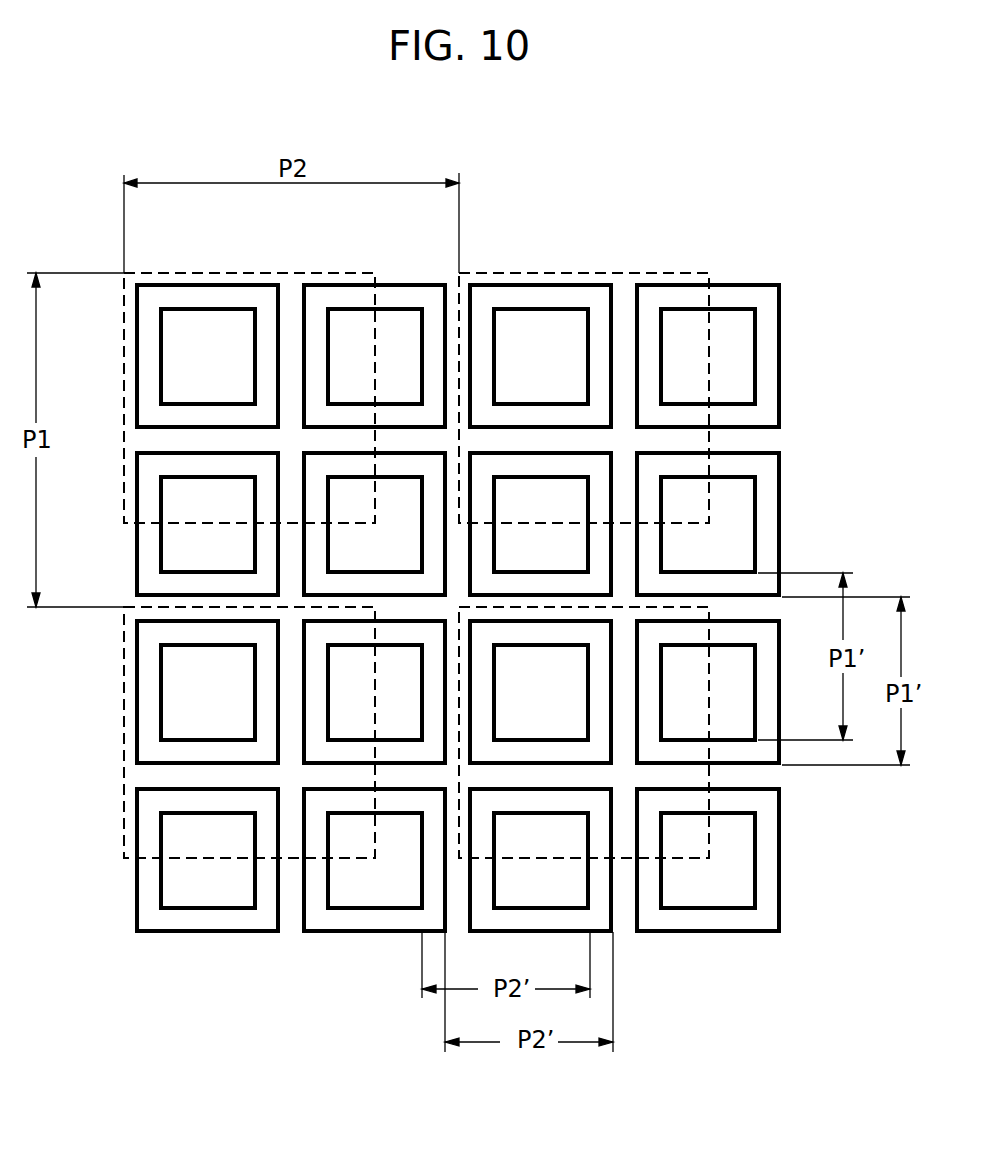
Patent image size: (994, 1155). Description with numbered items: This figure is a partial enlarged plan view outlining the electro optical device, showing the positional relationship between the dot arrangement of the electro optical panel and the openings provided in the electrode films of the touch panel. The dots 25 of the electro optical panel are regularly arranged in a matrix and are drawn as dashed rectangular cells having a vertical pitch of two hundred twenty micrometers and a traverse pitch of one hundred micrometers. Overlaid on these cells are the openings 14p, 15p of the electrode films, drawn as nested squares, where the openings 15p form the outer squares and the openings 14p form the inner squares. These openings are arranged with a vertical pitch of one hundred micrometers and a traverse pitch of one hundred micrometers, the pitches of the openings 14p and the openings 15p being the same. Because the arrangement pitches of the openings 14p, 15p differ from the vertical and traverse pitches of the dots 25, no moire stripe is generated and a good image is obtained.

The dot 25 is at (265, 272).
The opening 15p is at (660, 288).
The opening 14p is at (720, 310).